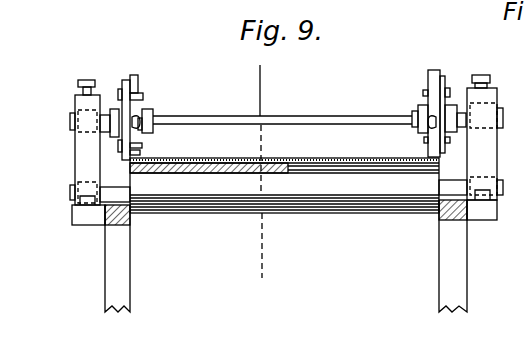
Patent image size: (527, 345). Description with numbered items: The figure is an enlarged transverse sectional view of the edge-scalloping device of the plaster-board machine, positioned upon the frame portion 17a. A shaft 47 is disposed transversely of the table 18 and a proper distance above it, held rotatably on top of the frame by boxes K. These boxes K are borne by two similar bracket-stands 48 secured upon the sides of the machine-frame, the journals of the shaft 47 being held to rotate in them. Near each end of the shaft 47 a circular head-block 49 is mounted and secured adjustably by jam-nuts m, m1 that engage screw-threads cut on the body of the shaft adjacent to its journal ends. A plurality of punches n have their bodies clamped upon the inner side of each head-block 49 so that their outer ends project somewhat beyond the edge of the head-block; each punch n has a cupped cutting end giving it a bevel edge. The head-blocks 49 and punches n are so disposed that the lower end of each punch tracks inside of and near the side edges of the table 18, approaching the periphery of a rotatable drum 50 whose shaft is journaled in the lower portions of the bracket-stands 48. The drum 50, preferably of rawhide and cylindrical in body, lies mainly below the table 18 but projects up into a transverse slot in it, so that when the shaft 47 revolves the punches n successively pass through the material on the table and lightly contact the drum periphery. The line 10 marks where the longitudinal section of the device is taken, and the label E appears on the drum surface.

The line 10 10 is at (260, 173).
The frame portion 17a is at (462, 256).
The table 18 is at (220, 176).
The shaft 47 is at (358, 117).
The bracket-stands 48 is at (85, 156).
The head-block 49 is at (123, 85).
The drum 50 is at (362, 210).
The boxes K is at (75, 105).
The jam-nut m is at (116, 118).
The jam-nut m1 is at (148, 113).
The punches n is at (136, 82).
The roller surface E is at (340, 163).